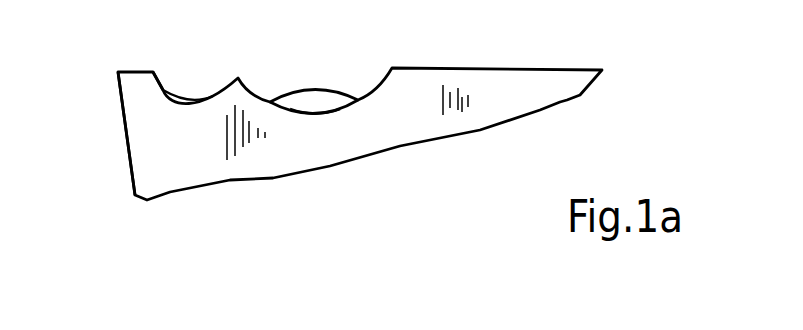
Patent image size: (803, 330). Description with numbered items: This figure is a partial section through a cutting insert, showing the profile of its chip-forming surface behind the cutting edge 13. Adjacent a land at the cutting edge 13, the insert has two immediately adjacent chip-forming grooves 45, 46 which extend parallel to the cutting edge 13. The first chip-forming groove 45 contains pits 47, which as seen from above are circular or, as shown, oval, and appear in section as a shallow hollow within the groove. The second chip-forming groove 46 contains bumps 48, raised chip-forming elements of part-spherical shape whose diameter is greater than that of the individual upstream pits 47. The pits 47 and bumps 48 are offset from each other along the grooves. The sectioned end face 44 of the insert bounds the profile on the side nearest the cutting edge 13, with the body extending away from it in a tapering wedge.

The cutting edge 13 is at (118, 72).
The end face 44 is at (123, 110).
The first chip-forming groove 45 is at (163, 90).
The second chip-forming groove 46 is at (302, 113).
The pits 47 is at (190, 100).
The bumps 48 is at (315, 93).